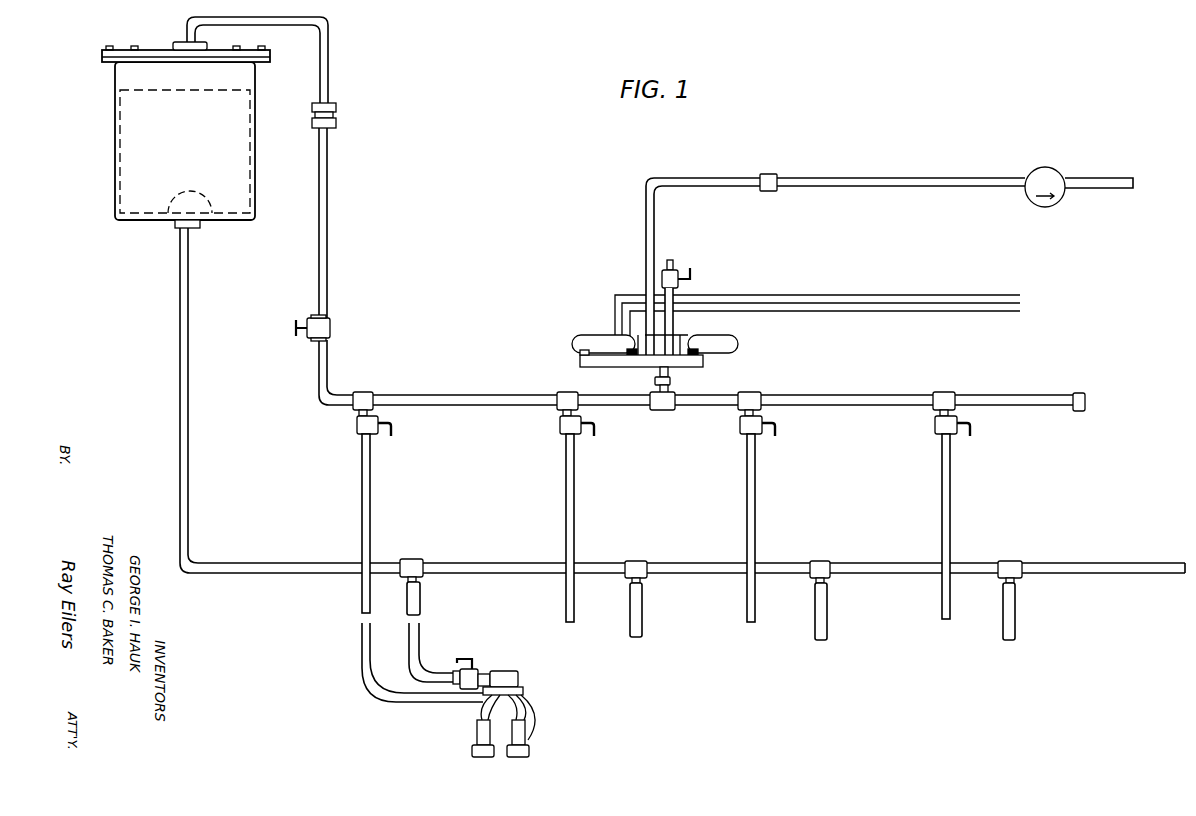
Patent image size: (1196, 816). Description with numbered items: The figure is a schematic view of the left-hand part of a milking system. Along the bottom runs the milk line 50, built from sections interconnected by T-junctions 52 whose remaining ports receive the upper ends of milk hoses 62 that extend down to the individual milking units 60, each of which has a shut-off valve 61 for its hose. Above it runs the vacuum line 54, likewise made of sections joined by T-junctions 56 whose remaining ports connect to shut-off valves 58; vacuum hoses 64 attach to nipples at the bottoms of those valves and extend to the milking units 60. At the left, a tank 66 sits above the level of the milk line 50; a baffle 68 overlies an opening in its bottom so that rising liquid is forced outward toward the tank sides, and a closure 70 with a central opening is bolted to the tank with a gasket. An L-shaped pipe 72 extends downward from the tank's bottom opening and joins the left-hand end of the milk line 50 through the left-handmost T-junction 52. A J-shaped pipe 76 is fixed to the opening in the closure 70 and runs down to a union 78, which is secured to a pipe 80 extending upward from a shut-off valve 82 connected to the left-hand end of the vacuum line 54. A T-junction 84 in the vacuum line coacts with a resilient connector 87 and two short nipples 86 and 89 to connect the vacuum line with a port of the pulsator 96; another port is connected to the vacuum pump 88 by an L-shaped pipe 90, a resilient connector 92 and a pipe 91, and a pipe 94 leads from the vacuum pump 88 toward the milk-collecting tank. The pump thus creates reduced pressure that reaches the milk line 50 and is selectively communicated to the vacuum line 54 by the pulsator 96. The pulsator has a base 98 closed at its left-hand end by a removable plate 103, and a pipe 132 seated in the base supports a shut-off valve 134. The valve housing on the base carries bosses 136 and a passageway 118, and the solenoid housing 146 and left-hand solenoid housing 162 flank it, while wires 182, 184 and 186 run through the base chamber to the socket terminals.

The milk line 50 is at (302, 561).
The T-junction 52 is at (425, 559).
The vacuum line 54 is at (460, 409).
The T-junction 56 is at (373, 394).
The shut-off valve 58 is at (356, 428).
The milking unit 60 is at (575, 696).
The shut-off valve 61 is at (476, 672).
The milk hose 62 is at (422, 632).
The vacuum hose 64 is at (358, 617).
The tank 66 is at (130, 222).
The baffle 68 is at (212, 205).
The closure 70 is at (128, 50).
The L-shaped pipe 72 is at (190, 430).
The J-shaped pipe 76 is at (331, 60).
The union 78 is at (337, 116).
The pipe 80 is at (330, 219).
The shut-off valve 82 is at (331, 330).
The T-junction 84 is at (665, 411).
The nipple 86 is at (668, 390).
The resilient connector 87 is at (655, 383).
The nipple 89 is at (669, 373).
The L-shaped pipe 90 is at (645, 231).
The pipe 91 is at (936, 188).
The resilient connector 92 is at (778, 177).
The pipe 94 is at (1121, 189).
The vacuum pump 88 is at (1043, 167).
The pulsator 96 is at (765, 337).
The base 98 is at (606, 371).
The plate 103 is at (580, 362).
The passageway 118 is at (685, 346).
The pipe 132 is at (680, 293).
The shut-off valve 134 is at (676, 271).
The boss 136 is at (628, 350).
The solenoid housing 146 is at (742, 346).
The left-hand solenoid housing 162 is at (574, 346).
The wire 182 is at (970, 312).
The wire 184 is at (897, 296).
The wire 186 is at (959, 303).